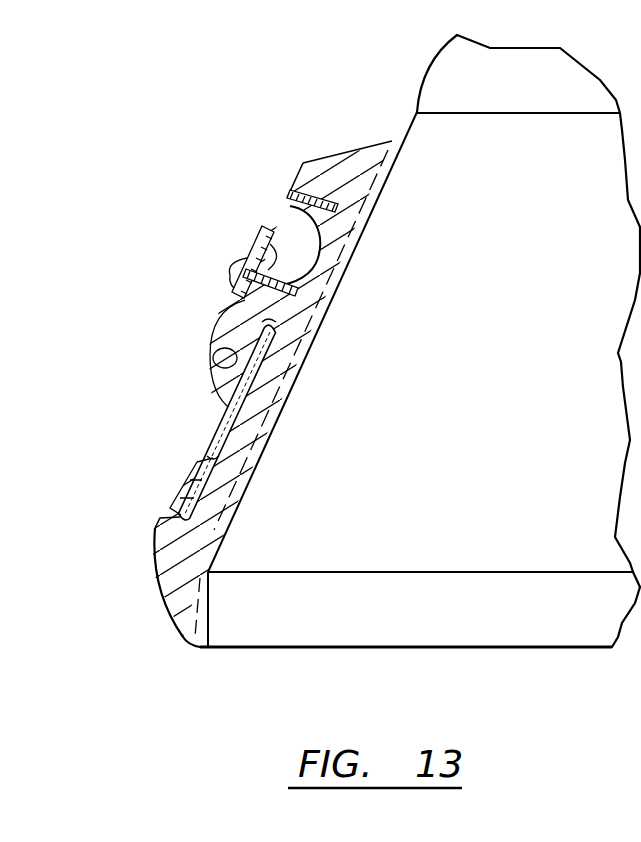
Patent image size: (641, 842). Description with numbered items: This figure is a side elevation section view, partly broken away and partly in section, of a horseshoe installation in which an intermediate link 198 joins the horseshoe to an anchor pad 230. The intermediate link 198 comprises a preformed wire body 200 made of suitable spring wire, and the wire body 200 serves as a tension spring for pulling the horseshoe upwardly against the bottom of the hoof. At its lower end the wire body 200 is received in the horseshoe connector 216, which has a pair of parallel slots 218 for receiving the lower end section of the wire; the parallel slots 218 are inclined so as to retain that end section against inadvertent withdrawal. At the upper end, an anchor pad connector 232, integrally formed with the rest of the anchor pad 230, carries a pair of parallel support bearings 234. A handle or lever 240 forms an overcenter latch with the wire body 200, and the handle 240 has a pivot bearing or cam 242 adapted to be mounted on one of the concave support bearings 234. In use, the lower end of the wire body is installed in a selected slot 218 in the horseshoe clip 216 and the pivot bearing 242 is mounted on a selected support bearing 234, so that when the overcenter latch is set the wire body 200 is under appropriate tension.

The anchor pad 230 is at (347, 160).
The anchor pad connector 232 is at (309, 265).
The support bearings 234 is at (250, 234).
The handle 240 is at (212, 330).
The intermediate link 198 is at (245, 305).
The pivot bearing 242 is at (266, 326).
The wire body 200 is at (215, 418).
The parallel slots 218 is at (170, 510).
The horseshoe connector 216 is at (167, 553).